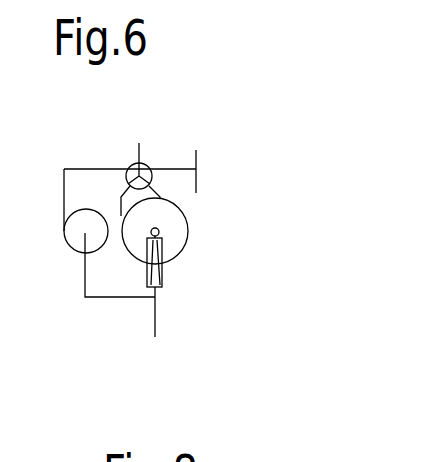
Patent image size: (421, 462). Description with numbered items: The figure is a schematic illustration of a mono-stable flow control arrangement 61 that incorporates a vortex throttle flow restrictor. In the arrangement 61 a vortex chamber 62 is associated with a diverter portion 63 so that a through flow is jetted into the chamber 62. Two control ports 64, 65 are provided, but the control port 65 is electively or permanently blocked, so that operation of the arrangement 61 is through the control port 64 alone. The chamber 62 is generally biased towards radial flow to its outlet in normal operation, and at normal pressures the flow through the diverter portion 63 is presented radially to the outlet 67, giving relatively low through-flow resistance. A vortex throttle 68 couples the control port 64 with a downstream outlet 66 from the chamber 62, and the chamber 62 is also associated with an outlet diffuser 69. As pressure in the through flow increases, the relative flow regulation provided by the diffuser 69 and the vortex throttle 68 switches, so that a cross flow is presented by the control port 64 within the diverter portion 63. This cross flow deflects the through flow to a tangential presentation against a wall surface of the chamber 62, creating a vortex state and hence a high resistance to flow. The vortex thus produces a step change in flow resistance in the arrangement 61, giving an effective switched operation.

The mono-stable flow control arrangement 61 is at (277, 177).
The vortex chamber 62 is at (177, 243).
The diverter portion 63 is at (147, 162).
The control port 64 is at (103, 167).
The control port 65 is at (179, 169).
The downstream outlet 66 is at (157, 317).
The outlet 67 is at (160, 232).
The vortex throttle 68 is at (75, 252).
The outlet diffuser 69 is at (162, 267).